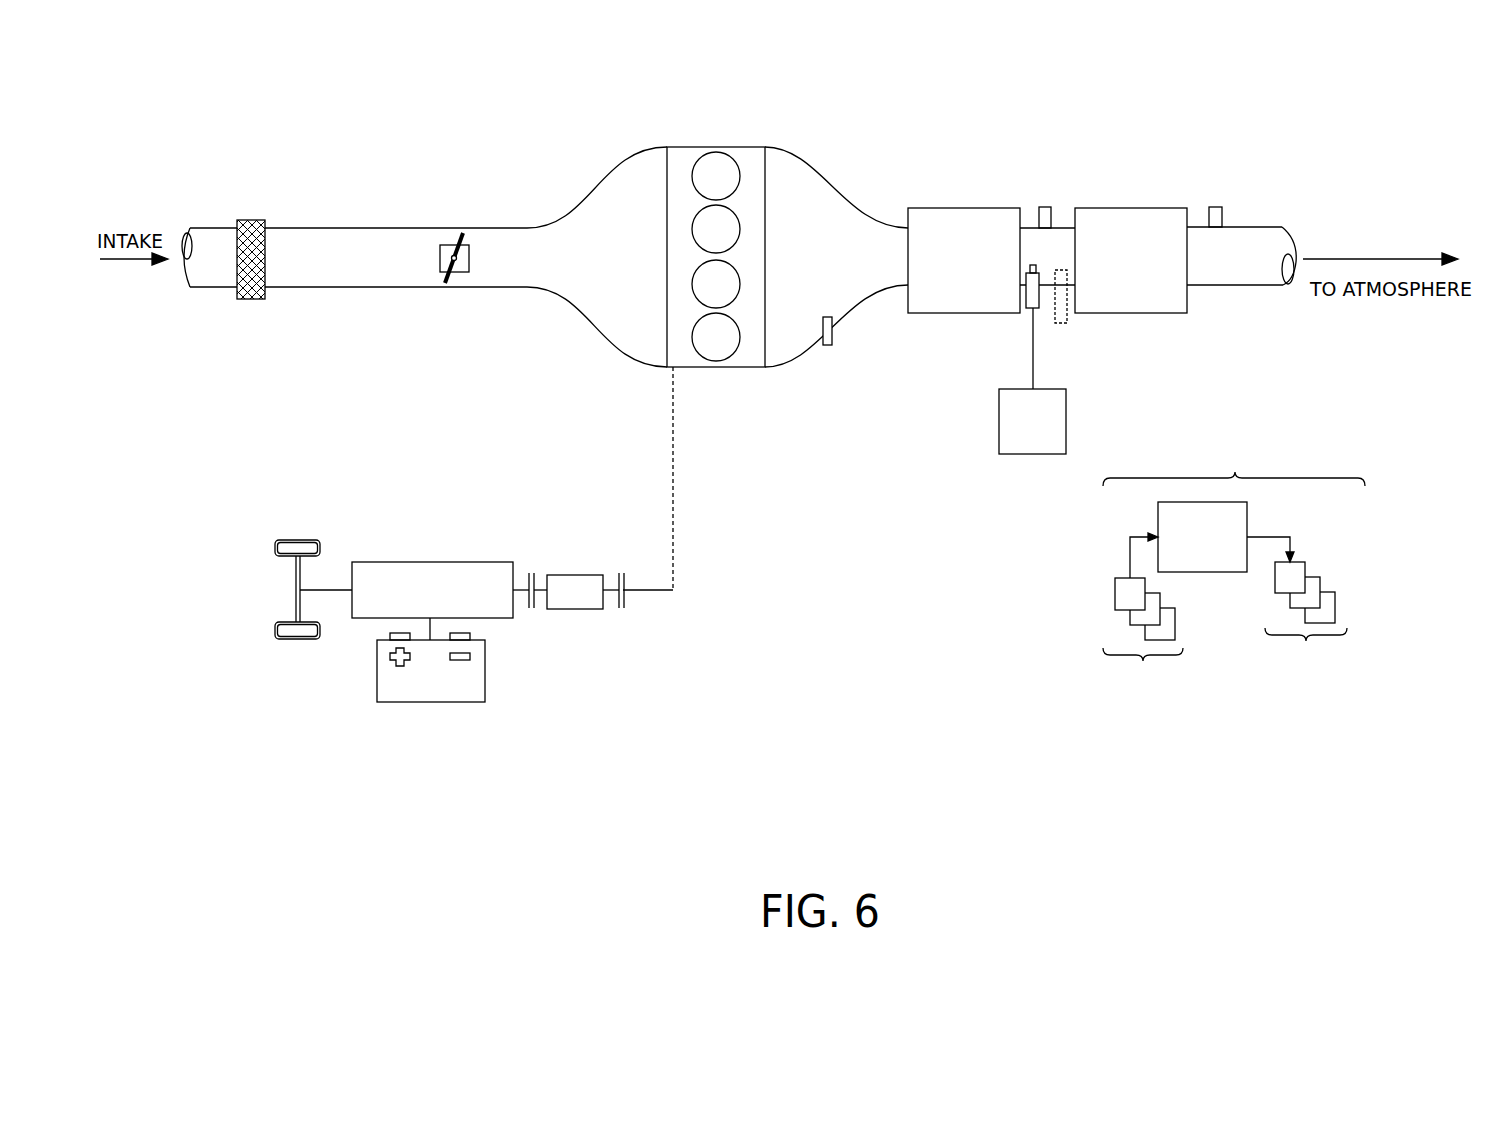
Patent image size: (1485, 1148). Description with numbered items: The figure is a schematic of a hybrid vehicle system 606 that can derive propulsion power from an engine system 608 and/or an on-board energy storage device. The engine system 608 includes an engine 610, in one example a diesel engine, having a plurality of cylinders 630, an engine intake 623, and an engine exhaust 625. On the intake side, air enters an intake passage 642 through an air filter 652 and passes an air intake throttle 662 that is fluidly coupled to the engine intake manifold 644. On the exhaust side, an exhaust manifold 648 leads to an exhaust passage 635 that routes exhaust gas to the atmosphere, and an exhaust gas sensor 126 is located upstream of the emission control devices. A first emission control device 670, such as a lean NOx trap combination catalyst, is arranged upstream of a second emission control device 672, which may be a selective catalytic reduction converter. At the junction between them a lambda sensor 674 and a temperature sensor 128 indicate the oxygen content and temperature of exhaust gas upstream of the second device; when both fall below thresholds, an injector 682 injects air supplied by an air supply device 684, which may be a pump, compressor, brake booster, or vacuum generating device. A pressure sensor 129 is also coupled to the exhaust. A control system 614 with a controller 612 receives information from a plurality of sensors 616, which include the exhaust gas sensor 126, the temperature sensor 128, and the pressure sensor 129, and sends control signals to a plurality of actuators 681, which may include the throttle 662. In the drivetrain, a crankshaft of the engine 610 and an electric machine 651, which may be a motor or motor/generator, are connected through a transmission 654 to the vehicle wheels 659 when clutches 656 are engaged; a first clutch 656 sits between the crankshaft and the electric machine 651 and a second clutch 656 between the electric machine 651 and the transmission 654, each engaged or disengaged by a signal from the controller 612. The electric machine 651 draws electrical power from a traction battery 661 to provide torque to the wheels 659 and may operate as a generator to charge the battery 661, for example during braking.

The hybrid vehicle system 606 is at (200, 124).
The engine system 608 is at (1326, 120).
The engine 610 is at (765, 237).
The controller 612 is at (1202, 537).
The control system 614 is at (1234, 456).
The sensors 616 is at (1143, 618).
The engine intake 623 is at (588, 176).
The engine exhaust 625 is at (883, 181).
The cylinders 630 is at (740, 170).
The engine intake manifold 644 is at (636, 269).
The exhaust manifold 648 is at (859, 269).
The exhaust gas sensor 126 is at (833, 318).
The intake passage 642 is at (213, 292).
The air filter 652 is at (253, 220).
The air intake throttle 662 is at (478, 266).
The first emission control device 670 is at (952, 208).
The second emission control device 672 is at (1118, 208).
The temperature sensor 128 is at (1044, 207).
The pressure sensor 129 is at (1216, 207).
The exhaust passage 635 is at (1263, 227).
The injector 682 is at (1024, 310).
The lambda sensor 674 is at (1060, 323).
The air supply device 684 is at (1048, 438).
The transmission 654 is at (375, 620).
The clutches 656 is at (536, 578).
The electric machine 651 is at (578, 612).
The vehicle wheels 659 is at (293, 642).
The traction battery 661 is at (433, 704).
The actuators 681 is at (1297, 612).